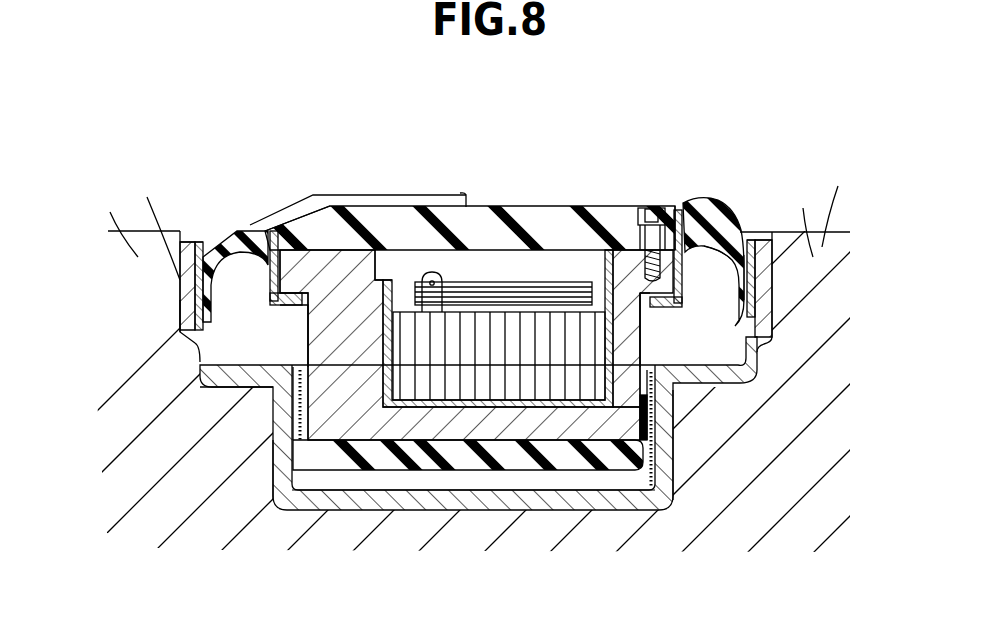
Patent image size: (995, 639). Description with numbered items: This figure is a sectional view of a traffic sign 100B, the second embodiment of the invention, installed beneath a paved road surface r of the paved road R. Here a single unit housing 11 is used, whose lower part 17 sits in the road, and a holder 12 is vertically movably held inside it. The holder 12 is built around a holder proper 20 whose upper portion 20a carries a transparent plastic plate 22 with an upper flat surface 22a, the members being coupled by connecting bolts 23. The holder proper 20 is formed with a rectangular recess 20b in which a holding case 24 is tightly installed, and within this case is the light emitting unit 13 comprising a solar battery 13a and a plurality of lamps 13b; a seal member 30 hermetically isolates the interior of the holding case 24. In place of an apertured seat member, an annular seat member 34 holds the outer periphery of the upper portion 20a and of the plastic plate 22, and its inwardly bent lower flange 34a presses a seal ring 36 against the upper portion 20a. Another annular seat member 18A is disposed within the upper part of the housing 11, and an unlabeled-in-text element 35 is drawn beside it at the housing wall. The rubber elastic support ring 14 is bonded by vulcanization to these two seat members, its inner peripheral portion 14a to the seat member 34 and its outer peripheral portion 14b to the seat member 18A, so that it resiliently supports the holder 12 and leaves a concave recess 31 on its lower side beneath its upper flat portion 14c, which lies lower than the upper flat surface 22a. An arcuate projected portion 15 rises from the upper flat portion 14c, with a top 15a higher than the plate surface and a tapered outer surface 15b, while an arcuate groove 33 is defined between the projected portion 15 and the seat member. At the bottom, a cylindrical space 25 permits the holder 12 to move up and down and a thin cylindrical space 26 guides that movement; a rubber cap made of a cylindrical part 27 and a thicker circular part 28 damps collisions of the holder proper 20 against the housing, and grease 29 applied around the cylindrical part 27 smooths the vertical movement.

The housing 11 is at (676, 415).
The holder 12 is at (643, 345).
The light emitting unit 13 is at (530, 280).
The solar battery 13a is at (558, 298).
The lamps 13b is at (433, 272).
The elastic support ring 14 is at (190, 262).
The inner peripheral portion 14a is at (262, 240).
The outer peripheral portion 14b is at (200, 307).
The upper flat portion 14c is at (232, 278).
The arcuate projected portion 15 is at (283, 240).
The top 15a is at (388, 196).
The tapered outer surface 15b is at (743, 222).
The lower part 17 is at (677, 467).
The annular seat member 18A is at (150, 227).
The holder proper 20 is at (593, 427).
The upper portion 20a is at (341, 196).
The rectangular recess 20b is at (337, 427).
The transparent plastic plate 22 is at (528, 217).
The upper flat surface 22a is at (482, 217).
The connecting bolts 23 is at (652, 208).
The holding case 24 is at (468, 407).
The cylindrical space 25 is at (388, 478).
The thin cylindrical space 26 is at (647, 483).
The cylindrical part 27 is at (273, 387).
The circular part 28 is at (550, 458).
The grease 29 is at (293, 432).
The seal member 30 is at (404, 207).
The concave recess 31 is at (111, 223).
The arcuate groove 33 is at (683, 208).
The annular seat member 34 is at (274, 262).
The inwardly bent lower flange 34a is at (290, 305).
The recess wall 35 is at (175, 320).
The seal ring 36 is at (663, 306).
The traffic sign 100B is at (690, 49).
The paved road R is at (836, 207).
The paved road surface r is at (808, 218).